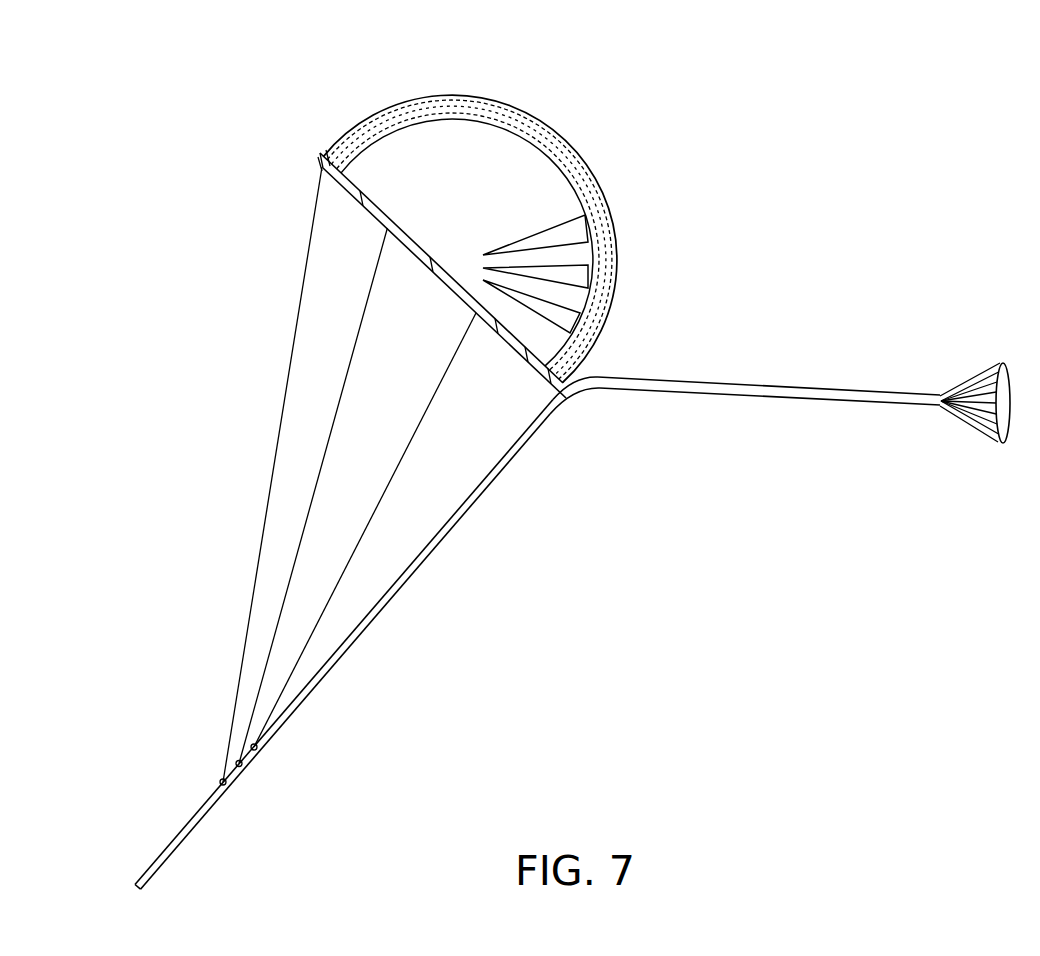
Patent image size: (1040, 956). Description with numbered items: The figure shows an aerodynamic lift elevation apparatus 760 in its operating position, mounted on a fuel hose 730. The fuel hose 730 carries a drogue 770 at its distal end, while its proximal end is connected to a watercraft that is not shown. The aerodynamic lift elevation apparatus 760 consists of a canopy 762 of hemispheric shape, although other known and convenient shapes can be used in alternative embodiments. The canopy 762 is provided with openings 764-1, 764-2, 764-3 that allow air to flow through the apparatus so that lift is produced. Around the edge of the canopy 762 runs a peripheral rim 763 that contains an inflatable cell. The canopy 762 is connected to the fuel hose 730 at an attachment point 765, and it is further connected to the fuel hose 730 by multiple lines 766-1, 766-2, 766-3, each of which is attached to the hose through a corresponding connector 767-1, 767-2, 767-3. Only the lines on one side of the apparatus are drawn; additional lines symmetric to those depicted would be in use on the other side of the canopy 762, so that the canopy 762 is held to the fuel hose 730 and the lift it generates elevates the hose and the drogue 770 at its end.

The aerodynamic lift elevation apparatus 760 is at (650, 137).
The canopy 762 is at (382, 113).
The peripheral rim 763 is at (327, 162).
The opening 764-1 is at (600, 224).
The opening 764-2 is at (607, 283).
The opening 764-3 is at (593, 333).
The attachment point 765 is at (573, 394).
The line 766-1 is at (302, 297).
The line 766-2 is at (353, 350).
The line 766-3 is at (398, 457).
The connector 767-1 is at (223, 779).
The connector 767-2 is at (239, 760).
The connector 767-3 is at (254, 744).
The fuel hose 730 is at (805, 404).
The drogue 770 is at (983, 373).